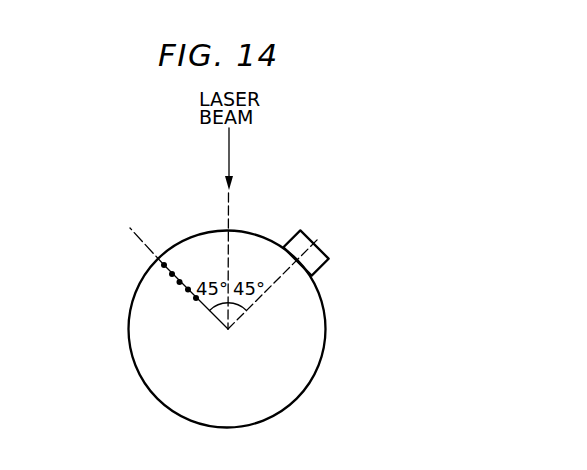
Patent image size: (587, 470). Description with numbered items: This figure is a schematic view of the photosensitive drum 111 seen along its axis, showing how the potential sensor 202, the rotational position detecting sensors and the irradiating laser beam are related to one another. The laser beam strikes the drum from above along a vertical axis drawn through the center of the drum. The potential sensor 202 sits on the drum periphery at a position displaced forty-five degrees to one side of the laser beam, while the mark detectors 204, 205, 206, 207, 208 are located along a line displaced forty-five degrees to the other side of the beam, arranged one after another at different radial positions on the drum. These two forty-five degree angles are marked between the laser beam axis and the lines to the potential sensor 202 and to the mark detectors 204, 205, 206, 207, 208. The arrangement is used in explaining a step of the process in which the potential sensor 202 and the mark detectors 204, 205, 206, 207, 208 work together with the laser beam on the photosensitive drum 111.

The photosensitive drum 111 is at (315, 357).
The potential sensor 202 is at (320, 250).
The mark detector 204 is at (164, 265).
The mark detector 205 is at (172, 274).
The mark detector 206 is at (180, 282).
The mark detector 207 is at (188, 290).
The mark detector 208 is at (196, 298).